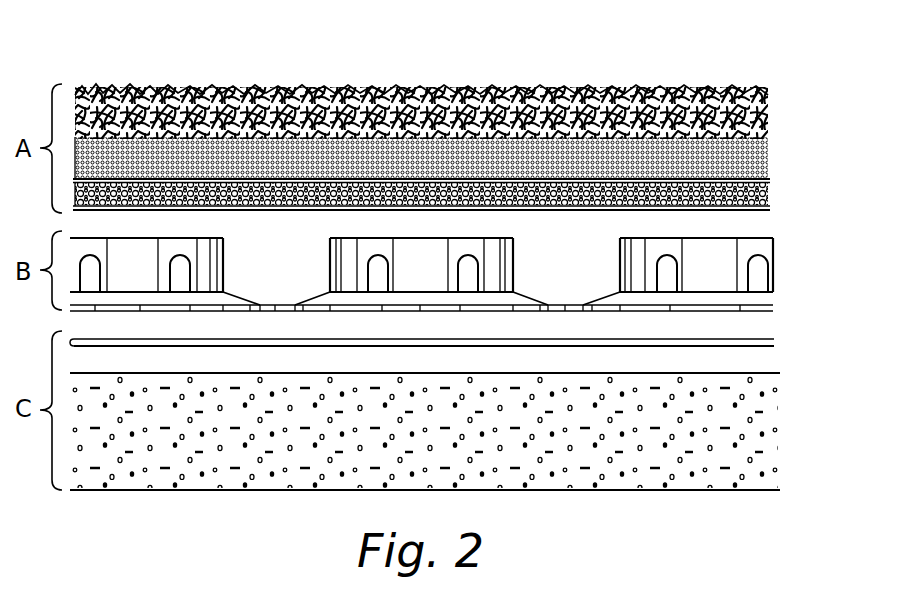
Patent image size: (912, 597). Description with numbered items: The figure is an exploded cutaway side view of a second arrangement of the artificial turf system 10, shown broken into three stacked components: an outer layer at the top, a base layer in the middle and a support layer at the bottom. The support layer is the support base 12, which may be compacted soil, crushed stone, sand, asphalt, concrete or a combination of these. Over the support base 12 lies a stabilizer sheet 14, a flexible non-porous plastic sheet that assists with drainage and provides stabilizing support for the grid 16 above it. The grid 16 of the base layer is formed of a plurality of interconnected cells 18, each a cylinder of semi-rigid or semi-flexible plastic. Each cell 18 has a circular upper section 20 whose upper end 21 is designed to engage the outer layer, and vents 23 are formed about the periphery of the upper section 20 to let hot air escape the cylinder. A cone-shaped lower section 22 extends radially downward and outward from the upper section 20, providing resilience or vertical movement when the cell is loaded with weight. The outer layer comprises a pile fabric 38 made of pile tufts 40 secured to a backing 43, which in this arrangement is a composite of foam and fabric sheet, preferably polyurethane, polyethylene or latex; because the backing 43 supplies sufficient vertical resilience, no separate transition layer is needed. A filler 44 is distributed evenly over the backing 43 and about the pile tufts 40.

The artificial turf system 10 is at (567, 63).
The support base 12 is at (758, 425).
The stabilizer sheet 14 is at (775, 343).
The grid 16 is at (808, 271).
The cell 18 is at (424, 305).
The upper section 20 is at (620, 262).
The upper end 21 is at (742, 238).
The lower section 22 is at (222, 297).
The vent 23 is at (470, 275).
The pile fabric 38 is at (739, 73).
The pile tuft 40 is at (764, 113).
The backing 43 is at (768, 192).
The filler 44 is at (768, 171).